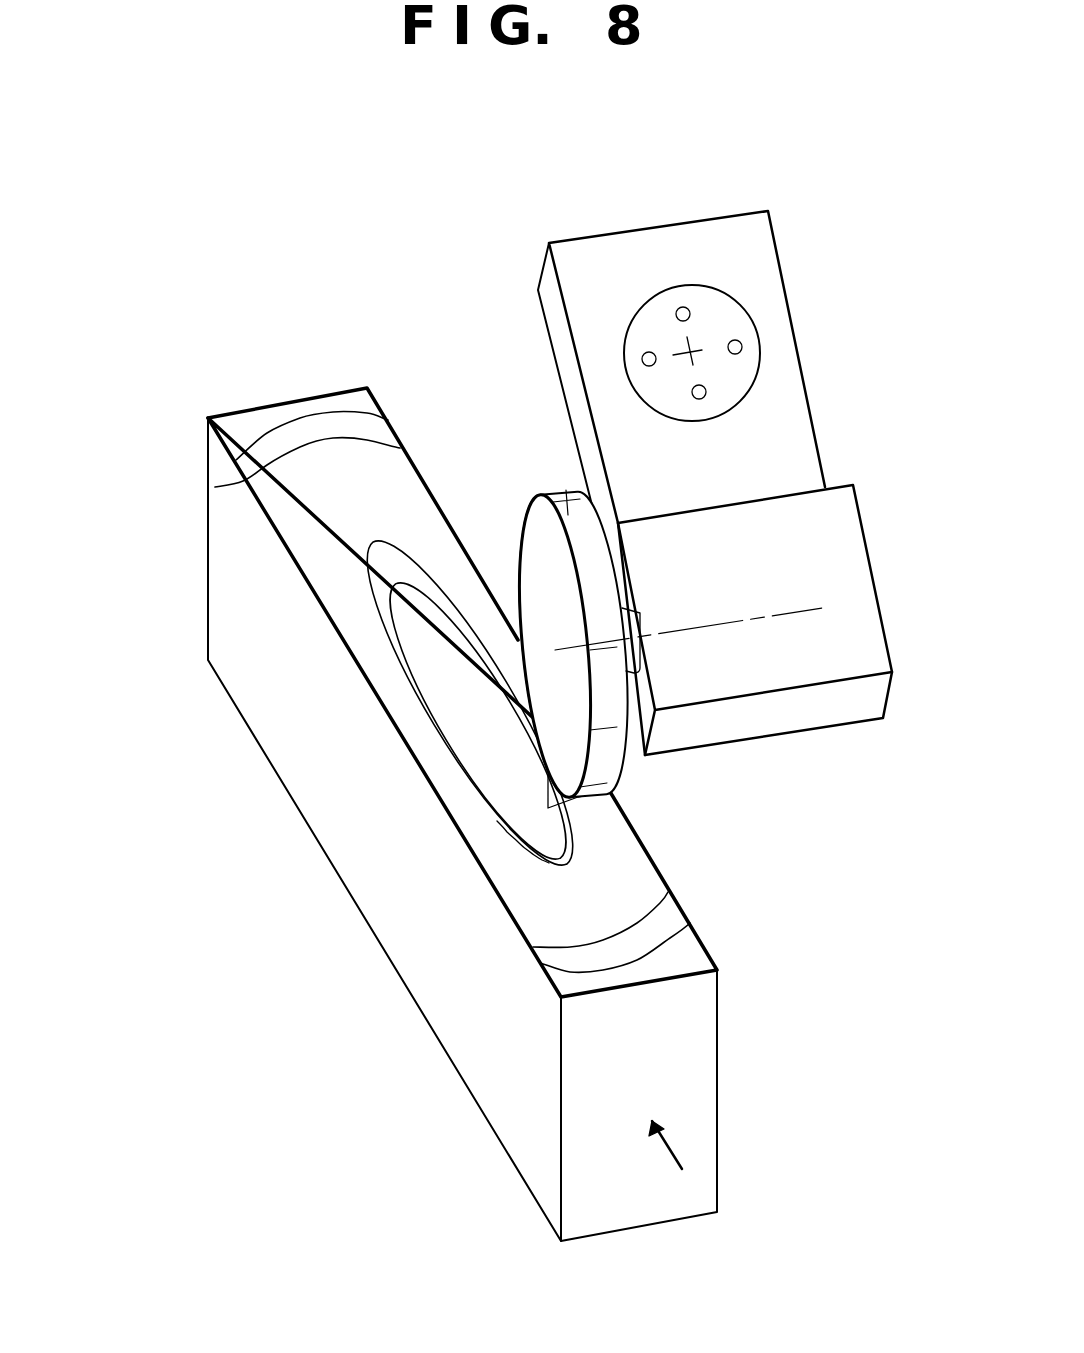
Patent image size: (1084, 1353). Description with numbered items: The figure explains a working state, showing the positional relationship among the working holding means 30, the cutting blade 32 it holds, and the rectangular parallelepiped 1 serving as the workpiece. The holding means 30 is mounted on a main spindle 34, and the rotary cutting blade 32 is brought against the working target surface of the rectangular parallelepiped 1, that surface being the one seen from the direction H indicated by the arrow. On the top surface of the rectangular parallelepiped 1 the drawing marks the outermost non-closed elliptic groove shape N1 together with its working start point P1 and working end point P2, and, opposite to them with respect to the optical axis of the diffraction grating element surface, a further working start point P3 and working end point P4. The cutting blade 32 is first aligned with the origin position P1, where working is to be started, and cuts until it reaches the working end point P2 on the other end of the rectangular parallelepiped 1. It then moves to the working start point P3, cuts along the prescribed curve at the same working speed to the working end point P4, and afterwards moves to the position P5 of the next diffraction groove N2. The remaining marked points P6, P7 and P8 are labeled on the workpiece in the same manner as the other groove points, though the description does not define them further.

The rectangular parallelepiped 1 is at (699, 1064).
The holding means 30 is at (565, 493).
The cutting blade 32 is at (593, 820).
The main spindle 34 is at (640, 613).
The outermost non-closed elliptic groove shape N1 is at (298, 417).
The next diffraction groove N2 is at (272, 473).
The origin position P1 is at (386, 418).
The working end point P2 is at (212, 487).
The working start point P3 is at (540, 964).
The working end point P4 is at (677, 903).
The position of the next diffraction groove P5 is at (400, 447).
The point P6 is at (272, 473).
The point P7 is at (535, 950).
The point P8 is at (655, 893).
The direction H is at (673, 1132).